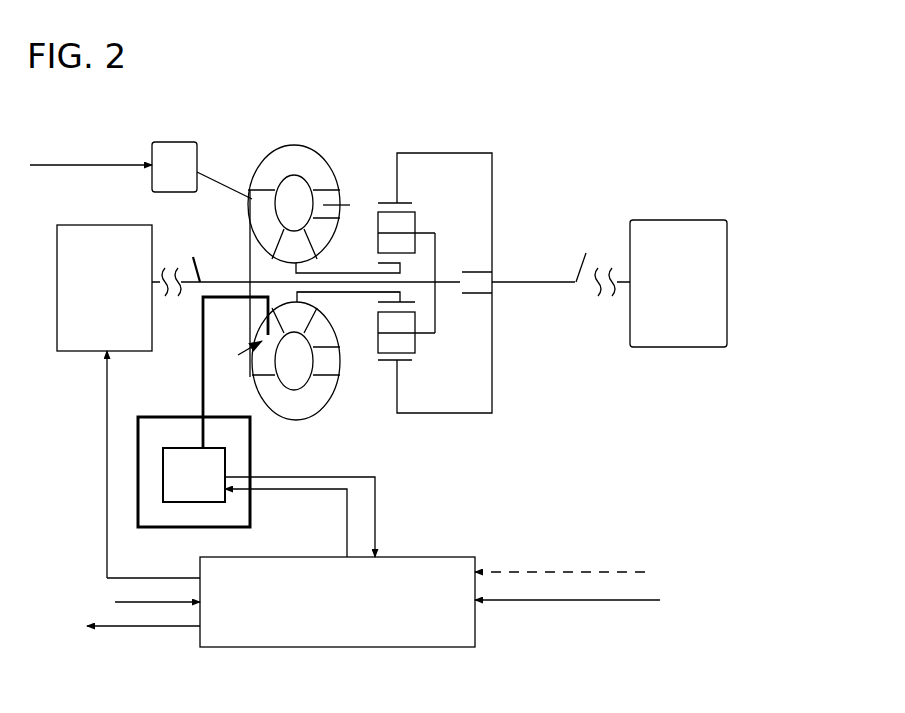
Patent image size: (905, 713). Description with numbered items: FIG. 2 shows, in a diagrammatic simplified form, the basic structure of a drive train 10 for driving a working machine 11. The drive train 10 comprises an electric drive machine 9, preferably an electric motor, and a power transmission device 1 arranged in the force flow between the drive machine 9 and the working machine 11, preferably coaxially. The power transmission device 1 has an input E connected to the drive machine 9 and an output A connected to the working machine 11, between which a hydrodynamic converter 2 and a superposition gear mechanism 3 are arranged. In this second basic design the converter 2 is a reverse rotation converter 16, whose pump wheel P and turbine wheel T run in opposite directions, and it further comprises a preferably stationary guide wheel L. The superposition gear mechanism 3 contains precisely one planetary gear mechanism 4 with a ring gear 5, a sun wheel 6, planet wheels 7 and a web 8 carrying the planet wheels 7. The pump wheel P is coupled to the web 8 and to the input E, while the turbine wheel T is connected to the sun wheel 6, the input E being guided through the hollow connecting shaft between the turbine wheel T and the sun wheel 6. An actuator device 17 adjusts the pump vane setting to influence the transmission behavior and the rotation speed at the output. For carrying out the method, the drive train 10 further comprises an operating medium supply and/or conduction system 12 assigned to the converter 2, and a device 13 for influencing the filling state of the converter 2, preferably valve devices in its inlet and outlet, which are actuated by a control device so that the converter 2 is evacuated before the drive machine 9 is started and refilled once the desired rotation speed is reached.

The drive train 10 is at (427, 57).
The power transmission device 1 is at (352, 102).
The hydrodynamic converter 2 is at (287, 132).
The reverse rotation converter 16 is at (318, 282).
The superposition gear mechanism 3 is at (453, 132).
The planetary gear mechanism 4 is at (405, 198).
The ring gear 5 is at (383, 203).
The sun wheel 6 is at (377, 295).
The planet wheels 7 is at (400, 343).
The web 8 is at (437, 237).
The electric drive machine 9 is at (104, 401).
The working machine 11 is at (678, 283).
The operating medium supply and/or conduction system 12 is at (203, 372).
The device for influencing the filling state 13 is at (194, 475).
The actuator device 17 is at (202, 170).